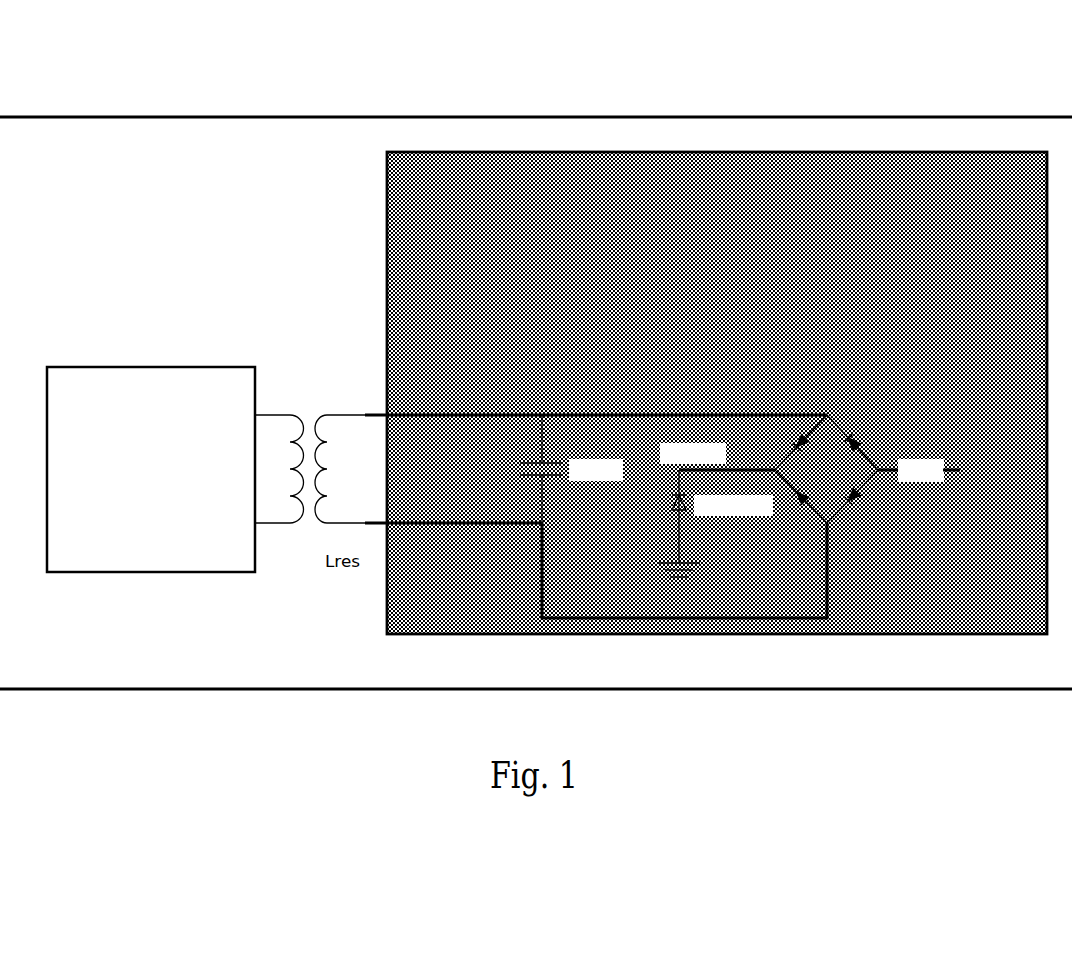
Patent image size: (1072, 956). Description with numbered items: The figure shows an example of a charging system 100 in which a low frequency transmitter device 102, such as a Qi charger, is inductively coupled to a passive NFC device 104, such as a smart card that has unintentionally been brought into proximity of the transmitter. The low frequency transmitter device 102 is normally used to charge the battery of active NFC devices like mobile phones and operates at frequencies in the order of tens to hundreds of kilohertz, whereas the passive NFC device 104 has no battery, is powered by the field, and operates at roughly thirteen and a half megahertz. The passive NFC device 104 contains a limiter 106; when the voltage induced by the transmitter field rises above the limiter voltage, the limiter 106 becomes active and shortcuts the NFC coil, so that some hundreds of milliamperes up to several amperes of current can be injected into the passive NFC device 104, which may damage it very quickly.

The charging system 100 is at (128, 117).
The low frequency (LF) transmitter device 102 is at (93, 396).
The passive NFC device 104 is at (443, 183).
The limiter 106 is at (747, 541).